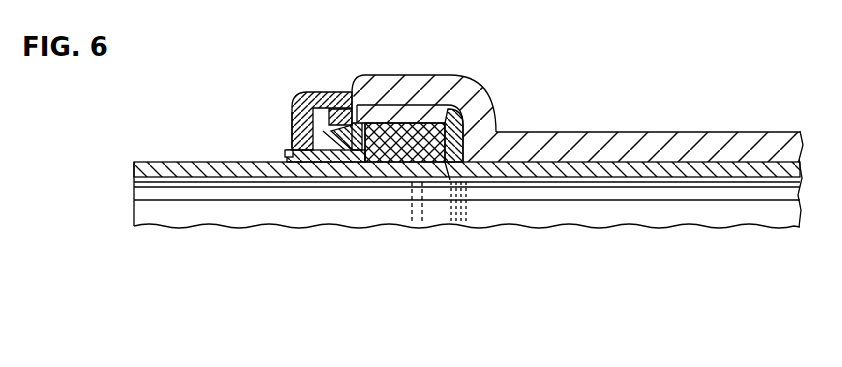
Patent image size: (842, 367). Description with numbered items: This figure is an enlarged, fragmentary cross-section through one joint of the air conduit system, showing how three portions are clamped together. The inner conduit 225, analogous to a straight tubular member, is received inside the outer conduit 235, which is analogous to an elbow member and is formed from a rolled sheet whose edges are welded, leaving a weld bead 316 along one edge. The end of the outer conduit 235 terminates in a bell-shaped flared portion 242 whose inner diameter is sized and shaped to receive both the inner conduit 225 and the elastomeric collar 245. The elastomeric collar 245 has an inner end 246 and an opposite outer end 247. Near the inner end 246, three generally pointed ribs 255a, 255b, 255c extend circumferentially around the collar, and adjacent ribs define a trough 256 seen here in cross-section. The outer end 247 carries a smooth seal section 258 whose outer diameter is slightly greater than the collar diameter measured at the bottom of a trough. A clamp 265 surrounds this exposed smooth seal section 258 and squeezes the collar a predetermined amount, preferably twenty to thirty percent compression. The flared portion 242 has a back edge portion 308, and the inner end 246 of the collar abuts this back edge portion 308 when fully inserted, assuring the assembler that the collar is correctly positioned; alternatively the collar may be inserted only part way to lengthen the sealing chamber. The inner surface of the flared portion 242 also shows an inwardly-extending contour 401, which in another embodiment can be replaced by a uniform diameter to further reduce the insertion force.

The inner conduit 225 is at (195, 179).
The outer conduit 235 is at (701, 183).
The flared portion 242 is at (360, 105).
The elastomeric collar 245 is at (365, 137).
The inner end 246 is at (450, 180).
The outer end 247 is at (285, 156).
The rib 255a is at (487, 108).
The rib 255b is at (426, 114).
The rib 255c is at (400, 104).
The trough 256 is at (455, 103).
The smooth seal section 258 is at (332, 168).
The clamp 265 is at (293, 122).
The back edge portion 308 is at (413, 153).
The weld bead 316 is at (660, 132).
The inwardly-extending contour 401 is at (352, 96).